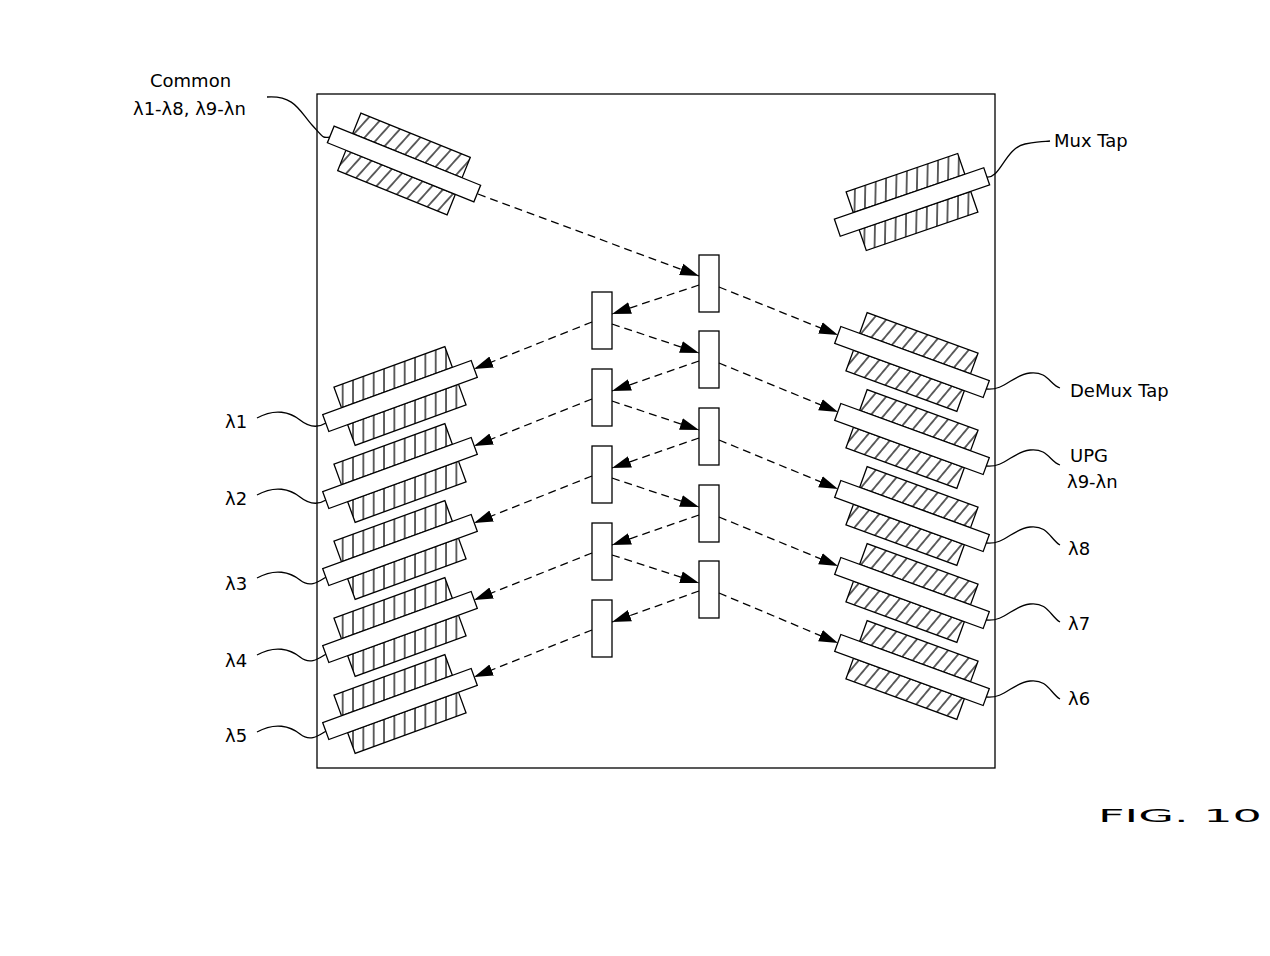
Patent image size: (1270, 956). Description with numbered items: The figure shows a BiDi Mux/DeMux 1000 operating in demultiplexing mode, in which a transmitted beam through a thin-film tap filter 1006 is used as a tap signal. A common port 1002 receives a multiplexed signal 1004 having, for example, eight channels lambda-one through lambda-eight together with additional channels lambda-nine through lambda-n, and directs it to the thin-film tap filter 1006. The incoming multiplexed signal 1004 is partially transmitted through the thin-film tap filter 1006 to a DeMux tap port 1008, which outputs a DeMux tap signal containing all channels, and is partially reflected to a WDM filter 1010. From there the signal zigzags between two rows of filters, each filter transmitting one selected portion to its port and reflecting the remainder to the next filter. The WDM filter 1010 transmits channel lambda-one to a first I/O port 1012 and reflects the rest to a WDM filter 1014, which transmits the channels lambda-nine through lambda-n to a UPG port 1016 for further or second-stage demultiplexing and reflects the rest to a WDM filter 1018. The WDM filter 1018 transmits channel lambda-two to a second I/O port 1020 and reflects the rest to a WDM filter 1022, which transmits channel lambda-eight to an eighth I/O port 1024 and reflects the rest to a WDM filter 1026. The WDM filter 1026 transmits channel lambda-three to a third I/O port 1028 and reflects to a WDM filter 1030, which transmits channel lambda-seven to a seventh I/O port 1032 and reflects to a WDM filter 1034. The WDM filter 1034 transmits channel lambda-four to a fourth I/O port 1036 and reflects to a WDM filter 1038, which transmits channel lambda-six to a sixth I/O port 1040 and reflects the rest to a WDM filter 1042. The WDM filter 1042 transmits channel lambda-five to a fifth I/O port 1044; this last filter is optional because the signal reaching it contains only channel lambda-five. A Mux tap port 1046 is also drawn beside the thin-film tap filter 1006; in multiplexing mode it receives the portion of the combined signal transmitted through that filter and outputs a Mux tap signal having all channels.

The BiDi Mux/DeMux 1000 is at (395, 66).
The common port 1002 is at (442, 148).
The multiplexed signal 1004 is at (523, 203).
The thin-film tap filter 1006 is at (712, 253).
The DeMux tap port 1008 is at (854, 326).
The WDM filter 1010 is at (592, 318).
The λ1 I/O port 1012 is at (466, 360).
The WDM filter 1014 is at (720, 356).
The UPG port 1016 is at (854, 403).
The WDM filter 1018 is at (592, 393).
The λ2 I/O port 1020 is at (466, 437).
The WDM filter 1022 is at (720, 432).
The λ8 I/O port 1024 is at (854, 480).
The WDM filter 1026 is at (592, 471).
The λ3 I/O port 1028 is at (466, 515).
The WDM filter 1030 is at (720, 509).
The λ7 I/O port 1032 is at (854, 557).
The WDM filter 1034 is at (592, 549).
The λ4 I/O port 1036 is at (466, 592).
The WDM filter 1038 is at (720, 582).
The λ6 I/O port 1040 is at (854, 634).
The WDM filter 1042 is at (592, 624).
The λ5 I/O port 1044 is at (466, 669).
The Mux tap port 1046 is at (888, 181).